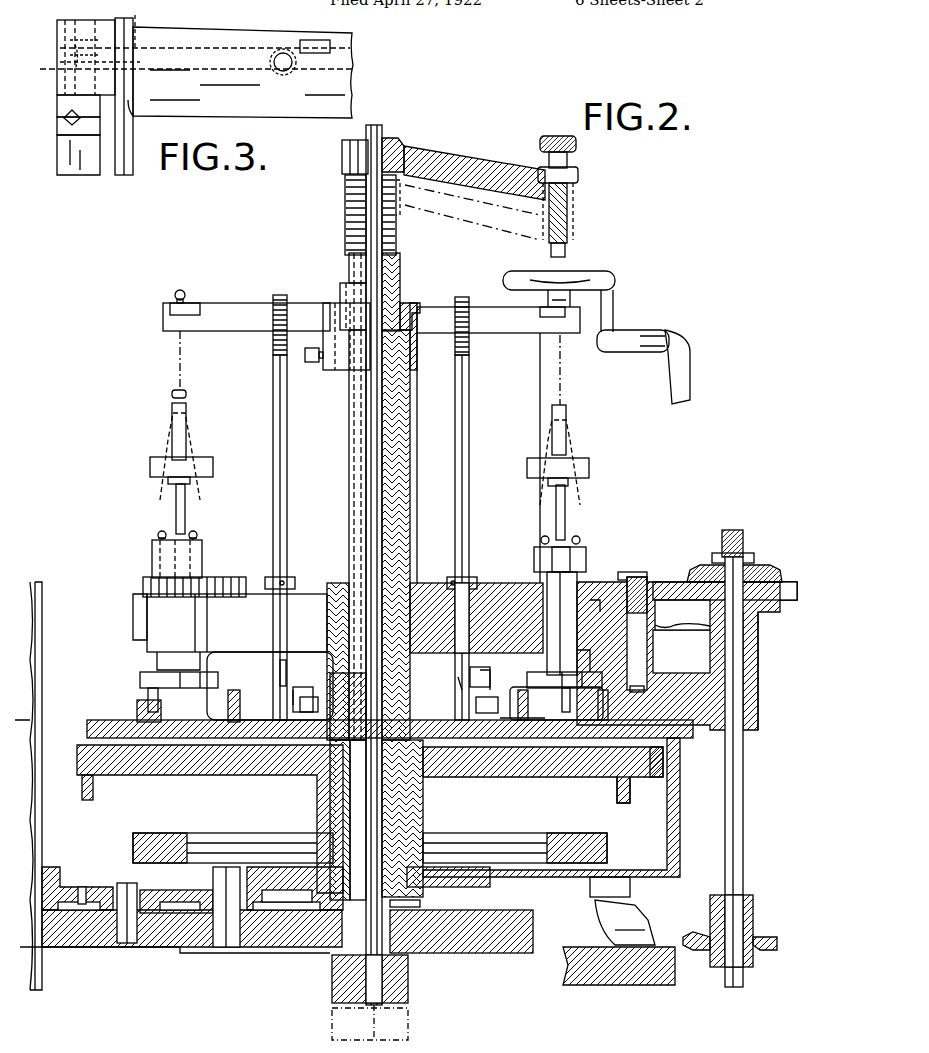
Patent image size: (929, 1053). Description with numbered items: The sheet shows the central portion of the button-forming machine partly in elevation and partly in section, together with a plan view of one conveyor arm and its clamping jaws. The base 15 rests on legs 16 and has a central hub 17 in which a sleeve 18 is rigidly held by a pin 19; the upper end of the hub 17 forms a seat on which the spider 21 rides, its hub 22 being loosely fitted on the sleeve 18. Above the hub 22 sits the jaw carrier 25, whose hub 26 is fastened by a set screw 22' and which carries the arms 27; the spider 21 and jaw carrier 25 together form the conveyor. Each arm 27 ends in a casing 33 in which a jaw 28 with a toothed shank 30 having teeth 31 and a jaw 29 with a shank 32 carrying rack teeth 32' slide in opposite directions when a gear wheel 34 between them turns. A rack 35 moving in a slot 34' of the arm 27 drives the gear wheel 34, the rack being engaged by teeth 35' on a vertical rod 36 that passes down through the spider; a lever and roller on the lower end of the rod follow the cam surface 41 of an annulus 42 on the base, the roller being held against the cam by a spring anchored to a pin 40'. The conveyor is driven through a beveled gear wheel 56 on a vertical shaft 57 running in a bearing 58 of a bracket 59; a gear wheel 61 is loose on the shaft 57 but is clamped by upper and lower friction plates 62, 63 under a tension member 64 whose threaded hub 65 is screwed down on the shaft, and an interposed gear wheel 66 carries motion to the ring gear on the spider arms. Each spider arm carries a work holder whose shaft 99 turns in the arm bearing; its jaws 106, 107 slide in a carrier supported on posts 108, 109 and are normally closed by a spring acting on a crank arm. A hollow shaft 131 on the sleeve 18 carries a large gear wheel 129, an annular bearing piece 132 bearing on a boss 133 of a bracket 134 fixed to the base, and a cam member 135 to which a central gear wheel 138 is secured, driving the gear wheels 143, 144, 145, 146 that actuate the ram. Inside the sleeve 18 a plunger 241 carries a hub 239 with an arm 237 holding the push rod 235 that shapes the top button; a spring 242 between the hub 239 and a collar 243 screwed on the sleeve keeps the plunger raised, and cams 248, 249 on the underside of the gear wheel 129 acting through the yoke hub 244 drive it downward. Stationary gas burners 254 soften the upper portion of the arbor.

In FIG. 3, the arms 27 is at (243, 72).
In FIG. 3, the jaw 28 is at (62, 127).
In FIG. 3, the jaw 29 is at (60, 104).
In FIG. 3, the shank 30 is at (133, 127).
In FIG. 3, the teeth 31 is at (97, 40).
In FIG. 3, the shank 32 is at (61, 53).
In FIG. 3, the teeth 32' is at (43, 57).
In FIG. 3, the casing 33 is at (133, 170).
In FIG. 3, the gear wheel 34 is at (112, 67).
In FIG. 3, the slot 34' is at (336, 33).
In FIG. 3, the rack 35 is at (205, 26).
In FIG. 3, the teeth 35' is at (212, 68).
In FIG. 3, the vertical rod 36 is at (282, 71).
In FIG. 2, the base 15 is at (680, 745).
In FIG. 2, the legs 16 is at (635, 910).
In FIG. 2, the hub 17 is at (410, 688).
In FIG. 2, the sleeve 18 is at (425, 812).
In FIG. 2, the pin 19 is at (387, 700).
In FIG. 2, the spider 21 is at (478, 458).
In FIG. 2, the hub 22 is at (371, 535).
In FIG. 2, the set screw 22' is at (311, 368).
In FIG. 2, the jaw carrier 25 is at (444, 312).
In FIG. 2, the hub 26 is at (412, 362).
In FIG. 2, the pin 40' is at (265, 668).
In FIG. 2, the cam surface 41 is at (533, 708).
In FIG. 2, the annulus 42 is at (502, 670).
In FIG. 2, the beveled gear wheel 56 is at (770, 938).
In FIG. 2, the vertical shaft 57 is at (743, 750).
In FIG. 2, the bearing 58 is at (758, 687).
In FIG. 2, the bracket 59 is at (681, 651).
In FIG. 2, the gear wheel 61 is at (792, 582).
In FIG. 2, the upper friction plate 62 is at (683, 582).
In FIG. 2, the lower friction plate 63 is at (675, 603).
In FIG. 2, the tension member 64 is at (755, 565).
In FIG. 2, the threaded hub 65 is at (715, 553).
In FIG. 2, the gear wheel 66 is at (640, 578).
In FIG. 2, the shaft 99 is at (562, 623).
In FIG. 2, the jaw 106 is at (568, 425).
In FIG. 2, the jaw 107 is at (186, 420).
In FIG. 2, the vertical post 108 is at (556, 525).
In FIG. 2, the vertical post 109 is at (176, 525).
In FIG. 2, the gear wheel 129 is at (657, 777).
In FIG. 2, the hollow shaft 131 is at (317, 800).
In FIG. 2, the annular bearing piece 132 is at (415, 903).
In FIG. 2, the boss 133 is at (440, 953).
In FIG. 2, the bracket 134 is at (520, 953).
In FIG. 2, the cam member 135 is at (528, 840).
In FIG. 2, the gear wheel 138 is at (490, 880).
In FIG. 2, the gear wheel 143 is at (200, 867).
In FIG. 2, the gear wheel 144 is at (275, 900).
In FIG. 2, the gear wheel 145 is at (160, 888).
In FIG. 2, the gear wheel 146 is at (65, 887).
In FIG. 2, the push rod 235 is at (578, 213).
In FIG. 2, the arm 237 is at (470, 163).
In FIG. 2, the hub 239 is at (392, 137).
In FIG. 2, the plunger 241 is at (378, 132).
In FIG. 2, the spring 242 is at (350, 222).
In FIG. 2, the collar 243 is at (402, 263).
In FIG. 2, the hub 244 is at (335, 998).
In FIG. 2, the cam 248 is at (95, 800).
In FIG. 2, the cam 249 is at (628, 803).
In FIG. 2, the gas burners 254 is at (585, 275).